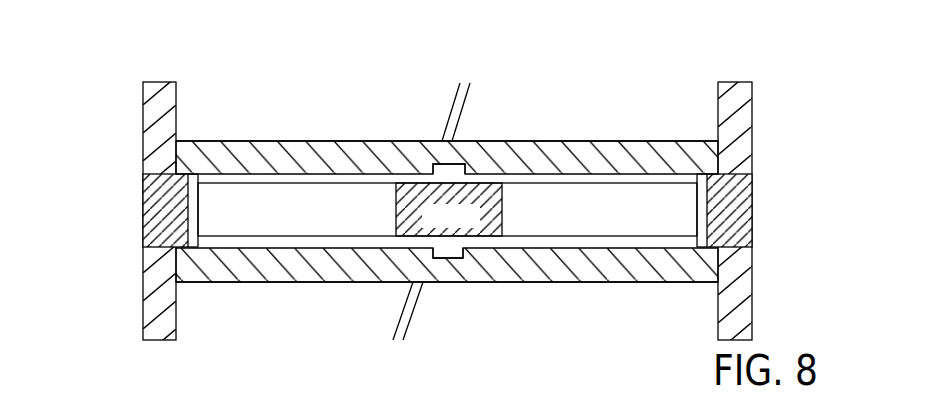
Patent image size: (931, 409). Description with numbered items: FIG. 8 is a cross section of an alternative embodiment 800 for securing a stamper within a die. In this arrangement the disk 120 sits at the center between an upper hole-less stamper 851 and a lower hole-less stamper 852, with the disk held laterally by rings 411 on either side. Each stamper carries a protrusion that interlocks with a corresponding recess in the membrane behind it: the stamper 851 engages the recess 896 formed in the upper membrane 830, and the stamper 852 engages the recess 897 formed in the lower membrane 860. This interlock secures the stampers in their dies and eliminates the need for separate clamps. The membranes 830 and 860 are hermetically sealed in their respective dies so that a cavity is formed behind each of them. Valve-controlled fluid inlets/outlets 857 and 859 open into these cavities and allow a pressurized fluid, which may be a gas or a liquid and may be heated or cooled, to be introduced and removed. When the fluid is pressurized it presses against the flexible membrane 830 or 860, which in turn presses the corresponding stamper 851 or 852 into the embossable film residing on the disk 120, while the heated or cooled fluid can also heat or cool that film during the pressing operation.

The stamper securing assembly 800 is at (184, 37).
The ring 411 is at (790, 212).
The hole-less stamper 851 is at (302, 174).
The hole-less stamper 852 is at (302, 249).
The membrane 830 is at (563, 143).
The membrane 860 is at (658, 279).
The valve-controlled fluid inlet/outlet 857 is at (452, 113).
The valve-controlled fluid inlet/outlet 859 is at (417, 307).
The recess 896 is at (473, 164).
The recess 897 is at (480, 256).
The disk 120 is at (338, 226).